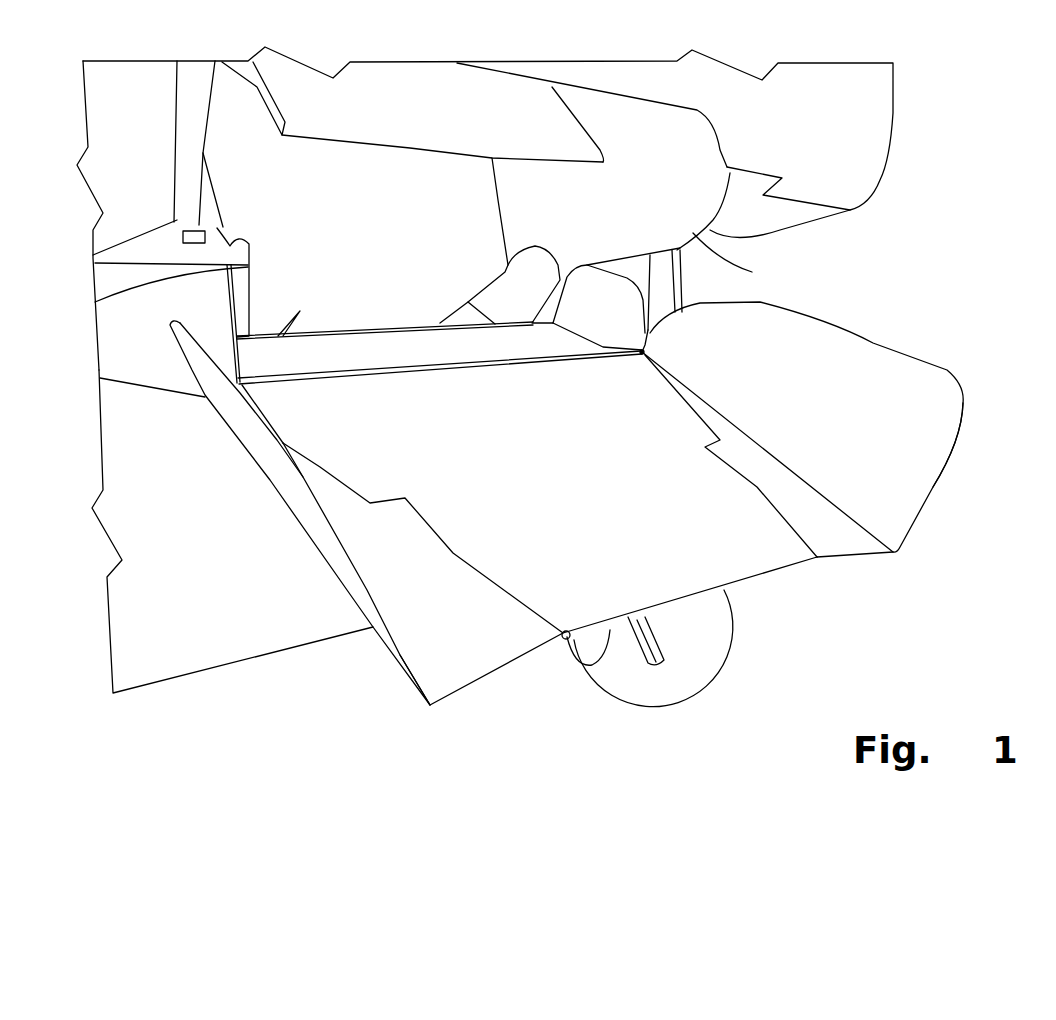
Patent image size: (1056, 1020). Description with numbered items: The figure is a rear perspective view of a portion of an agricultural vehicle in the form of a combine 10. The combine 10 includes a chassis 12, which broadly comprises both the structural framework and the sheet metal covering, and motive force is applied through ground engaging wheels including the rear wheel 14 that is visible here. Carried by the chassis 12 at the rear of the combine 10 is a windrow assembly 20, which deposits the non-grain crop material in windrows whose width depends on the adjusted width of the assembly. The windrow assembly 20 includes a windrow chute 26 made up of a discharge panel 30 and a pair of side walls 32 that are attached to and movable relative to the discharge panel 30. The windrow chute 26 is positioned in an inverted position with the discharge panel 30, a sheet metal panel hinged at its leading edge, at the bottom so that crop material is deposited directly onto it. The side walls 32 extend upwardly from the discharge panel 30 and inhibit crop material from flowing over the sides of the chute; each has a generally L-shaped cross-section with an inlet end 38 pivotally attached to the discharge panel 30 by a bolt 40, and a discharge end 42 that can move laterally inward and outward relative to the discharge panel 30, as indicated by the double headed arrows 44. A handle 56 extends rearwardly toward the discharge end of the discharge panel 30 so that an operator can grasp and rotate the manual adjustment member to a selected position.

The combine 10 is at (912, 125).
The chassis 12 is at (790, 187).
The windrow assembly 20 is at (906, 323).
The windrow chute 26 is at (842, 575).
The discharge panel 30 is at (730, 563).
The side walls 32 is at (913, 500).
The inlet end 38 is at (652, 343).
The bolt 40 is at (636, 366).
The discharge end 42 is at (947, 467).
The double headed arrows 44 is at (862, 571).
The rear wheel 14 is at (703, 630).
The handle 56 is at (658, 668).